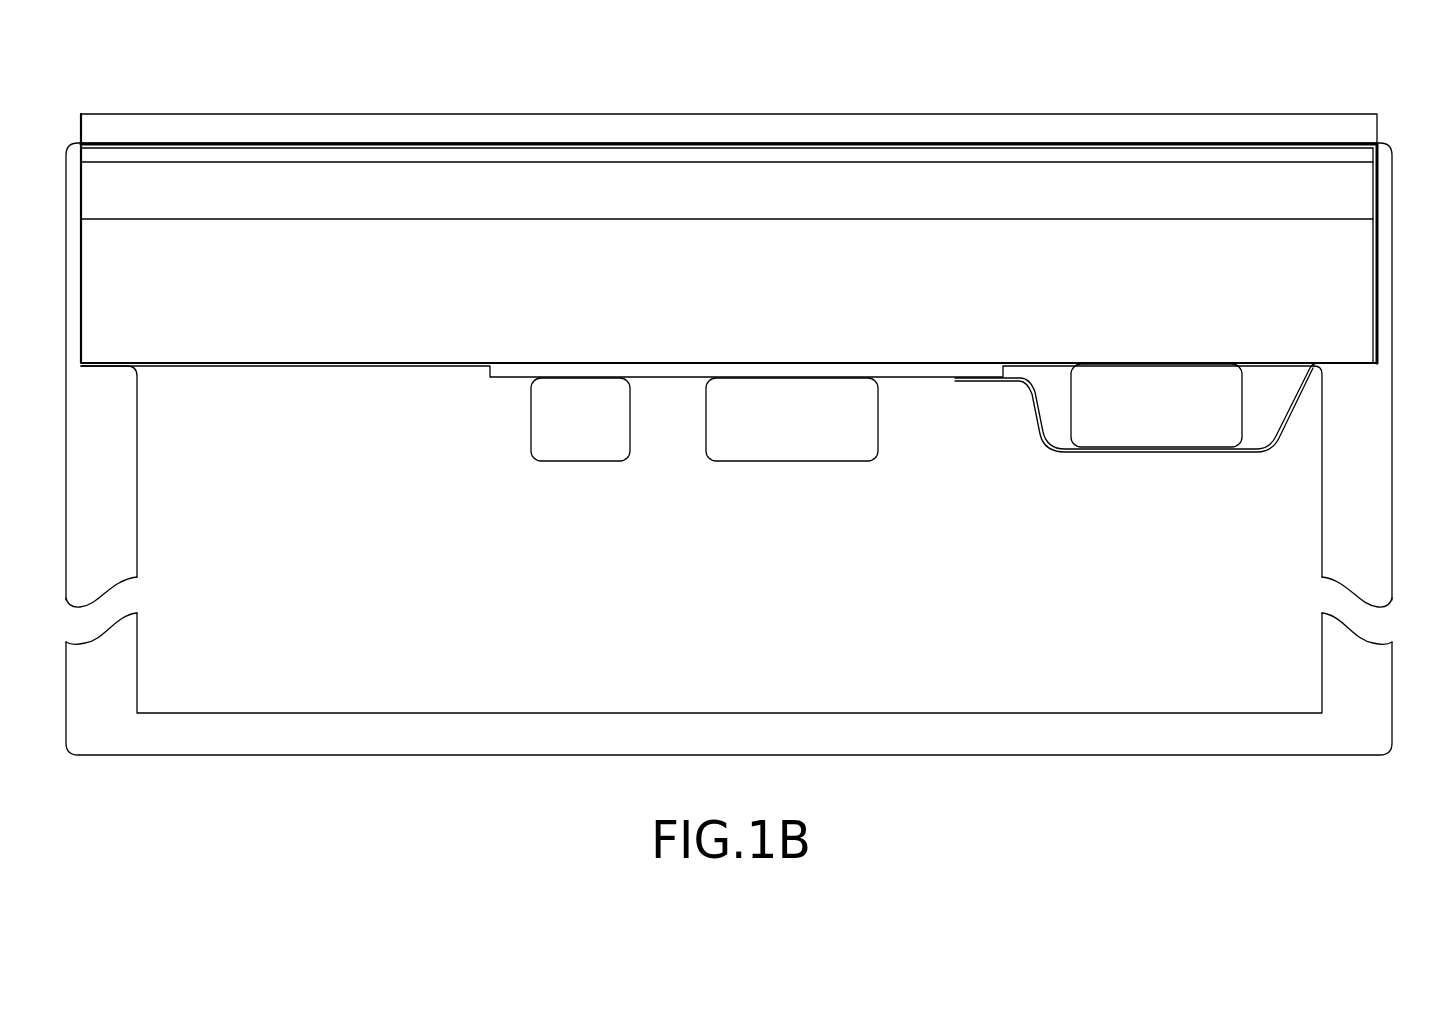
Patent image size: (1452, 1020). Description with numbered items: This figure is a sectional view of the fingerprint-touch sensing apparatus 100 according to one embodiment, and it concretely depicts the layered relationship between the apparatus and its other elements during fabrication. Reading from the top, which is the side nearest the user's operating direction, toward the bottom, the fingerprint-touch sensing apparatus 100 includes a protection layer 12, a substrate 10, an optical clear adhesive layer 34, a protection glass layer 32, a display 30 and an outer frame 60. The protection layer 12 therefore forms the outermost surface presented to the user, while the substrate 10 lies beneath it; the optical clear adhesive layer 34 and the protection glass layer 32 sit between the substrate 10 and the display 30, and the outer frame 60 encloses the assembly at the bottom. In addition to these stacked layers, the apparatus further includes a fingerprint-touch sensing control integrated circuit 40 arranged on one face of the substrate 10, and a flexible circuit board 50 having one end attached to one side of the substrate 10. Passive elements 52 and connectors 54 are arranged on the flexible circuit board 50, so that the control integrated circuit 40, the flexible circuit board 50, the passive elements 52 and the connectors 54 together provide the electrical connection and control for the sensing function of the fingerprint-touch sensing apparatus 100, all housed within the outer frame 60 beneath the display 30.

The fingerprint-touch sensing apparatus 100 is at (751, 40).
The substrate 10 is at (1298, 145).
The protection layer 12 is at (769, 122).
The display 30 is at (410, 337).
The protection glass layer 32 is at (636, 197).
The optical clear adhesive layer 34 is at (984, 155).
The fingerprint-touch sensing control integrated circuit 40 is at (1156, 429).
The flexible circuit board 50 is at (909, 370).
The passive elements 52 is at (792, 445).
The connectors 54 is at (583, 445).
The outer frame 60 is at (1383, 510).